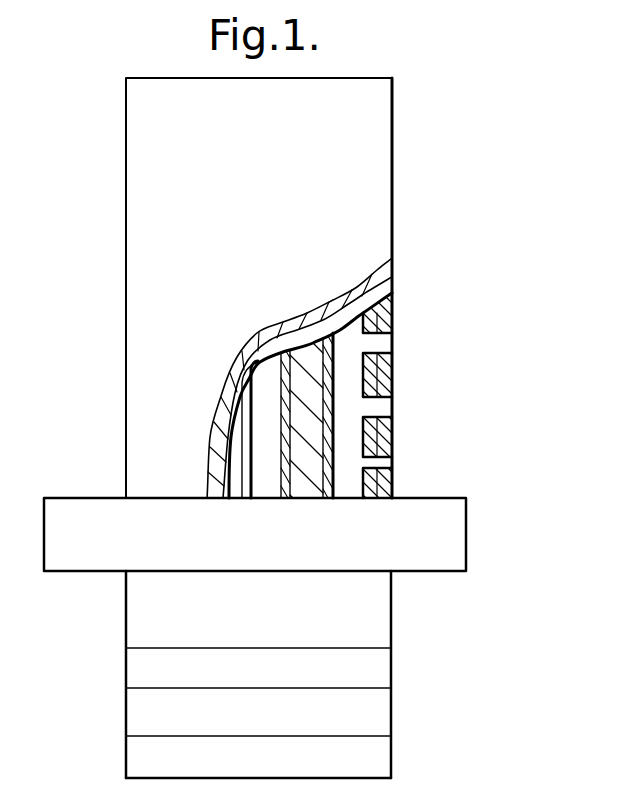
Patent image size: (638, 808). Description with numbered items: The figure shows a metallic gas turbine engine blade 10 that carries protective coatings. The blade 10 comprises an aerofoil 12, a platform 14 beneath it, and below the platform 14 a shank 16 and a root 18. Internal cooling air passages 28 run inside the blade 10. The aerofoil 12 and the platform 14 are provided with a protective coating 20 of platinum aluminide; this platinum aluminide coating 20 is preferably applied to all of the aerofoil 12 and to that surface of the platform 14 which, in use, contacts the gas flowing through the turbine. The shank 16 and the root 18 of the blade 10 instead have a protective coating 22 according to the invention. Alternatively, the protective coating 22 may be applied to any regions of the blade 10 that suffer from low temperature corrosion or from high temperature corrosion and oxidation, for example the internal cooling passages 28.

The gas turbine engine blade 10 is at (457, 107).
The aerofoil 12 is at (393, 185).
The platform 14 is at (458, 537).
The shank 16 is at (393, 613).
The root 18 is at (392, 710).
The protective coating of platinum aluminide 20 is at (222, 410).
The protective coating 22 is at (285, 397).
The internal cooling air passages 28 is at (270, 337).